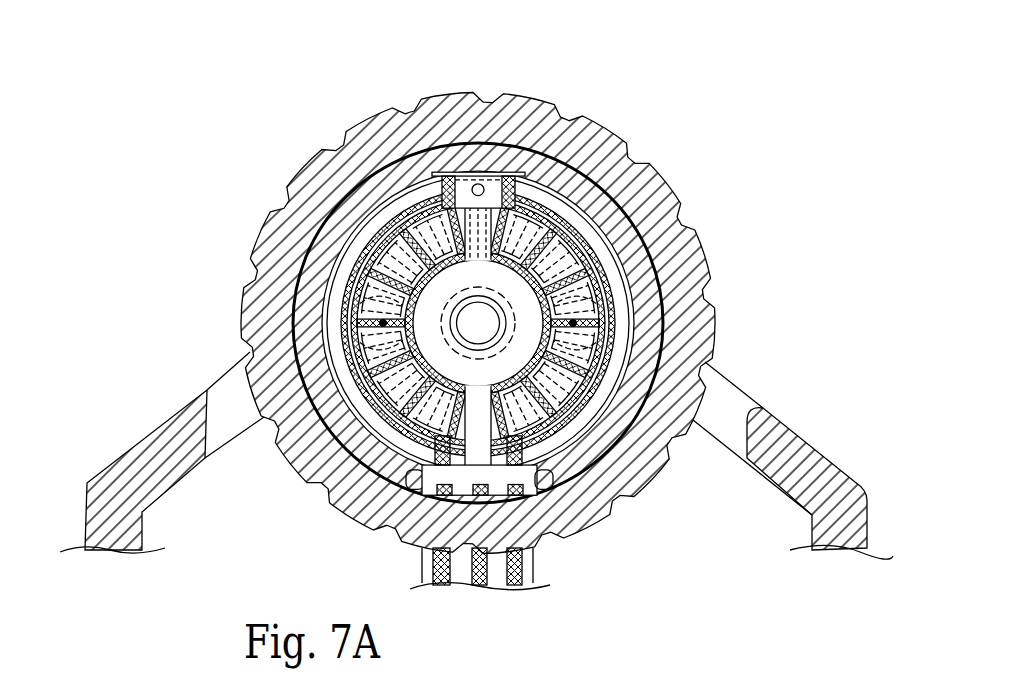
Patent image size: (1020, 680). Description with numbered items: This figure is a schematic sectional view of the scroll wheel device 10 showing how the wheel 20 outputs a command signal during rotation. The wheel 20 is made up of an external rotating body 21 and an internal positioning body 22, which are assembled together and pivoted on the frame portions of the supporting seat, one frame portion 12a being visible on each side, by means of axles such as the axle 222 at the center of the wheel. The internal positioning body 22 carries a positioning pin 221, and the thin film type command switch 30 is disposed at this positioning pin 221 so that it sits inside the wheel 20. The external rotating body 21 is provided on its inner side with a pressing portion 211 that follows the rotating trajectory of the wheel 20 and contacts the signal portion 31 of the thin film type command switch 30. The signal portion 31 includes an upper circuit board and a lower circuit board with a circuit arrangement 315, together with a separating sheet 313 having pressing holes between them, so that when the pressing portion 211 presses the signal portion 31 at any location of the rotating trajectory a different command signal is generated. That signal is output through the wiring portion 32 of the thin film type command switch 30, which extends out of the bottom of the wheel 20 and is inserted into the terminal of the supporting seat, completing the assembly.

The scroll wheel device 10 is at (146, 148).
The wheel 20 is at (259, 219).
The external rotating body 21 is at (690, 328).
The internal positioning body 22 is at (656, 178).
The pressing portion 211 is at (620, 277).
The thin film type command switch 30 is at (342, 233).
The signal portion 31 is at (337, 281).
The positioning pin 221 is at (480, 184).
The axle 222 is at (482, 318).
The circuit arrangement 315 is at (412, 484).
The separating sheet 313 is at (606, 466).
The wiring portion 32 is at (528, 567).
The frame portion 12a is at (142, 465).